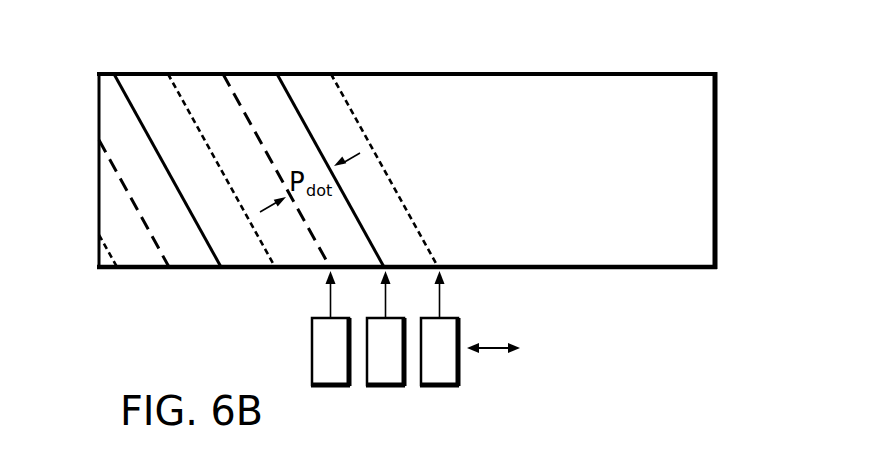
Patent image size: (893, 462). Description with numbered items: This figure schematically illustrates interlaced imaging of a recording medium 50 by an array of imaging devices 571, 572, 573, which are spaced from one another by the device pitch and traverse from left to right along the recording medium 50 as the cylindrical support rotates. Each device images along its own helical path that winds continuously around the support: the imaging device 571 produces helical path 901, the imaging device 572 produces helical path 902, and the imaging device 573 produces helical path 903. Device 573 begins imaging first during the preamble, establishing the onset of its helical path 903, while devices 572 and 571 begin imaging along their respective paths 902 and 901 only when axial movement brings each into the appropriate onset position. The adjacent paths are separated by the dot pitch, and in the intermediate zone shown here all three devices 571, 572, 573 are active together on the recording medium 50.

The recording medium 50 is at (697, 128).
The helical path 901 is at (235, 93).
The helical path 902 is at (290, 93).
The helical path 903 is at (345, 93).
The imaging device 571 is at (327, 387).
The imaging device 572 is at (387, 387).
The imaging device 573 is at (441, 387).